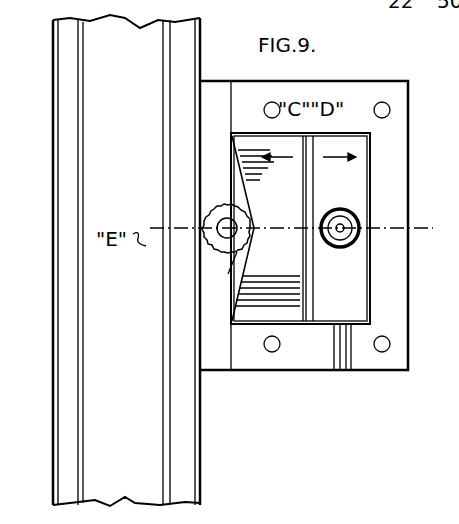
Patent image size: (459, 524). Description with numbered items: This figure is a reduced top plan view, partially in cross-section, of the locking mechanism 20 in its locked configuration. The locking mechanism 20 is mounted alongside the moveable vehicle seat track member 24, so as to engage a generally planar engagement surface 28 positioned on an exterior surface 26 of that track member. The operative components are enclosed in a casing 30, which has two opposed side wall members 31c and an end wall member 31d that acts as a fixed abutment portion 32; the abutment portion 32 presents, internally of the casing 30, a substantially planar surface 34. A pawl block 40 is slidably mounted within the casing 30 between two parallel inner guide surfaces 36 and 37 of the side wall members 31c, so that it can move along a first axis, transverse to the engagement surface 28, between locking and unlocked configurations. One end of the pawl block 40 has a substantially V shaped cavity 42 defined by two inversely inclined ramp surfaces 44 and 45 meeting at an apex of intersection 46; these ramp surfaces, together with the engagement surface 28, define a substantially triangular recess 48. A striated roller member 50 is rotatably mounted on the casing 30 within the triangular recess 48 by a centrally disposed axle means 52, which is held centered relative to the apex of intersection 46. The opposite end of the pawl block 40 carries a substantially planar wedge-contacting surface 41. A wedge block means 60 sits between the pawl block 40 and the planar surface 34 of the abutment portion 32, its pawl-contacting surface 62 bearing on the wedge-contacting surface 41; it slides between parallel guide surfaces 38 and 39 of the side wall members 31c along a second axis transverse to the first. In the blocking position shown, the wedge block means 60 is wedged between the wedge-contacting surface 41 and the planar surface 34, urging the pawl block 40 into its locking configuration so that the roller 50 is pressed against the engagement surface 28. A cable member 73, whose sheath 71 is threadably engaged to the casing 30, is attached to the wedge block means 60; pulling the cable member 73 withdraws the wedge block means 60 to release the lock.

The locking mechanism 20 is at (316, 418).
The moveable vehicle seat track member 24 is at (53, 112).
The exterior surface 26 is at (200, 74).
The generally planar engagement surface 28 is at (200, 112).
The casing 30 is at (408, 81).
The side wall members 31c is at (340, 81).
The end wall member 31d is at (408, 348).
The abutment portion 32 is at (384, 204).
The substantially planar surface 34 is at (372, 264).
The inner guide surface 36 is at (250, 132).
The inner guide surface 37 is at (244, 332).
The guide surface 38 is at (354, 132).
The guide surface 39 is at (346, 332).
The pawl block 40 is at (292, 332).
The wedge-contacting surface 41 is at (306, 226).
The V shaped cavity 42 is at (218, 274).
The ramp surface 44 is at (232, 158).
The ramp surface 45 is at (200, 312).
The apex of intersection 46 is at (256, 232).
The substantially triangular recess 48 is at (233, 190).
The striated roller member 50 is at (238, 206).
The axle means 52 is at (216, 218).
The wedge block means 60 is at (368, 306).
The pawl-contacting surface 62 is at (368, 170).
The sheath 71 is at (338, 299).
The cable member 73 is at (346, 246).